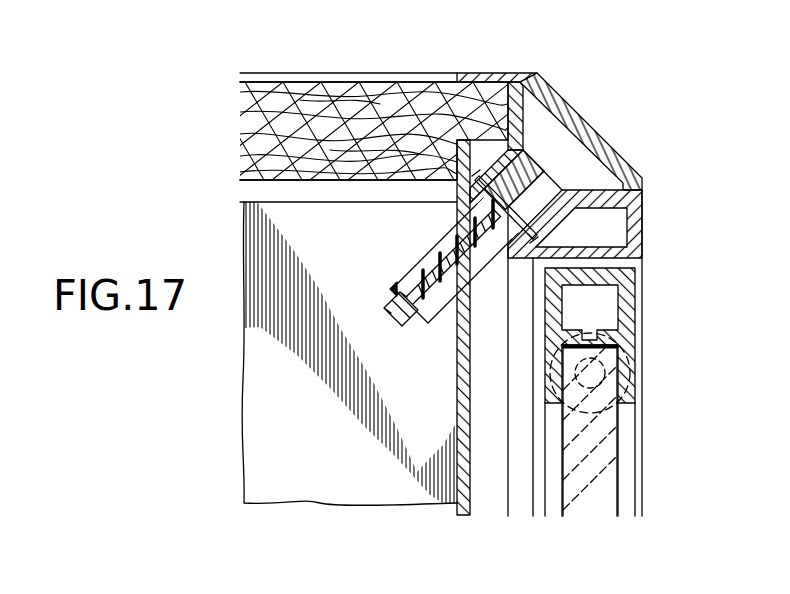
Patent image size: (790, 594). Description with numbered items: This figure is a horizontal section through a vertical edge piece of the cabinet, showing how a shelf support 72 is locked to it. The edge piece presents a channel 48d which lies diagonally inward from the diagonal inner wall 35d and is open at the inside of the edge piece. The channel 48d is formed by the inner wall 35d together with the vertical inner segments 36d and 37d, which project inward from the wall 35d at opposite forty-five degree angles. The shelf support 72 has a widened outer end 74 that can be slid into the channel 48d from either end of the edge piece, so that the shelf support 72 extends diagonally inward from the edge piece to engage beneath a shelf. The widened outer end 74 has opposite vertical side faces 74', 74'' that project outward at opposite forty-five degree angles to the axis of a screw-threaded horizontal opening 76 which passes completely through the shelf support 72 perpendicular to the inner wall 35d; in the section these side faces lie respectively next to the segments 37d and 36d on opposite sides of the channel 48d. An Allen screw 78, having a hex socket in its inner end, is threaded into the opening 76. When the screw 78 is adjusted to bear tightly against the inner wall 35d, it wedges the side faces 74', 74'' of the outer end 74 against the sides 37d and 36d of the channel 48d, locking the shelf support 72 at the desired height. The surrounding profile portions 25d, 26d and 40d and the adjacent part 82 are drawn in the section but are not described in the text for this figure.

The frame member 25d is at (593, 136).
The top wall of frame member 26d is at (476, 73).
The inclined wall of frame member 40d is at (545, 112).
The diagonal inner wall 35d is at (528, 203).
The vertical inner segment 37d is at (470, 192).
The vertical inner segment 36d is at (535, 255).
The channel 48d is at (512, 258).
The widened outer end 74 is at (508, 196).
The vertical side face 74' is at (424, 210).
The vertical side face 74'' is at (505, 267).
The shelf support 72 is at (417, 258).
The screw-threaded horizontal opening 76 is at (453, 240).
The Allen screw 78 is at (403, 322).
The retainer housing 82 is at (628, 302).